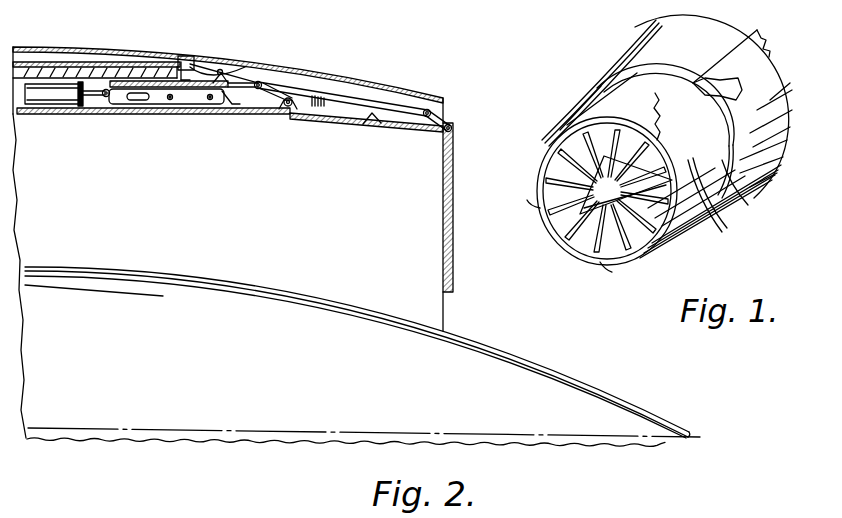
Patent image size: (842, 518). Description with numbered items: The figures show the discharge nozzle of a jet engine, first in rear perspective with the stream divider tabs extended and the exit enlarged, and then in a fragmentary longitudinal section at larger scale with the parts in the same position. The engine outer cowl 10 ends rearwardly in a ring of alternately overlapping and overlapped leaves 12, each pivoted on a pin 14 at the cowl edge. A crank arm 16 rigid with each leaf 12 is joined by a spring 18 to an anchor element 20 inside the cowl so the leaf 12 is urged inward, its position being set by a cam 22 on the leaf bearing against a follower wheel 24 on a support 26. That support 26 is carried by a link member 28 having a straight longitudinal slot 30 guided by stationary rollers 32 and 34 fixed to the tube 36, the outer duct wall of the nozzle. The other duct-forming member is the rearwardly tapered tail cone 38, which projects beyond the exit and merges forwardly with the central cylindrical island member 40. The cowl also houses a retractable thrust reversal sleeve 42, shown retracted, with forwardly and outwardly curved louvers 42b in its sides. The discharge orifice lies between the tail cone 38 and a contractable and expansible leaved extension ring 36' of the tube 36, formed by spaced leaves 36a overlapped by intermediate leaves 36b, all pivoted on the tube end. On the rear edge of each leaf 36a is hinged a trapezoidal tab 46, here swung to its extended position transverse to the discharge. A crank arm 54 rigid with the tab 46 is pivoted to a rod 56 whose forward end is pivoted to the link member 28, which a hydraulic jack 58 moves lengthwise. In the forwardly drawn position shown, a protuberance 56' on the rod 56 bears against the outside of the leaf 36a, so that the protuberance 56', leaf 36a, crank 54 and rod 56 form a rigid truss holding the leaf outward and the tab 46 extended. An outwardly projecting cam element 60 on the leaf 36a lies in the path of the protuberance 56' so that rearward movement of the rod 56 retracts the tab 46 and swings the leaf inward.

In FIG. 2, the engine outer cowl 10 is at (66, 47).
In FIG. 1, the engine outer cowl 10 is at (626, 46).
In FIG. 2, the leaves 12 is at (300, 70).
In FIG. 1, the leaves 12 is at (620, 93).
In FIG. 2, the pin 14 is at (188, 56).
In FIG. 2, the crank arm 16 is at (197, 60).
In FIG. 2, the spring 18 is at (165, 64).
In FIG. 2, the anchor element 20 is at (148, 54).
In FIG. 2, the cam 22 is at (221, 64).
In FIG. 2, the follower wheel 24 is at (248, 72).
In FIG. 2, the support 26 is at (256, 80).
In FIG. 2, the link member 28 is at (226, 98).
In FIG. 1, the link member 28 is at (730, 163).
In FIG. 2, the longitudinal slot 30 is at (140, 100).
In FIG. 2, the stationary roller 32 is at (180, 103).
In FIG. 2, the stationary roller 34 is at (198, 101).
In FIG. 2, the tube 36 is at (153, 129).
In FIG. 2, the leaves of extension ring 36a is at (338, 122).
In FIG. 1, the intermediately situated leaves 36b is at (583, 245).
In FIG. 2, the leaved extension ring 36' is at (429, 140).
In FIG. 2, the tail cone 38 is at (490, 350).
In FIG. 1, the tail cone 38 is at (565, 232).
In FIG. 2, the central cylindrical island member 40 is at (133, 281).
In FIG. 2, the thrust reversal sleeve 42 is at (45, 62).
In FIG. 1, the thrust reversal sleeve 42 is at (757, 34).
In FIG. 2, the louvers 42b is at (86, 72).
In FIG. 2, the tab 46 is at (452, 233).
In FIG. 1, the tab 46 is at (527, 200).
In FIG. 2, the crank arm 54 is at (447, 120).
In FIG. 2, the rod 56 is at (343, 84).
In FIG. 1, the rod 56 is at (715, 199).
In FIG. 2, the protuberance 56' is at (298, 128).
In FIG. 2, the hydraulic jack 58 is at (44, 97).
In FIG. 2, the cam element 60 is at (373, 118).